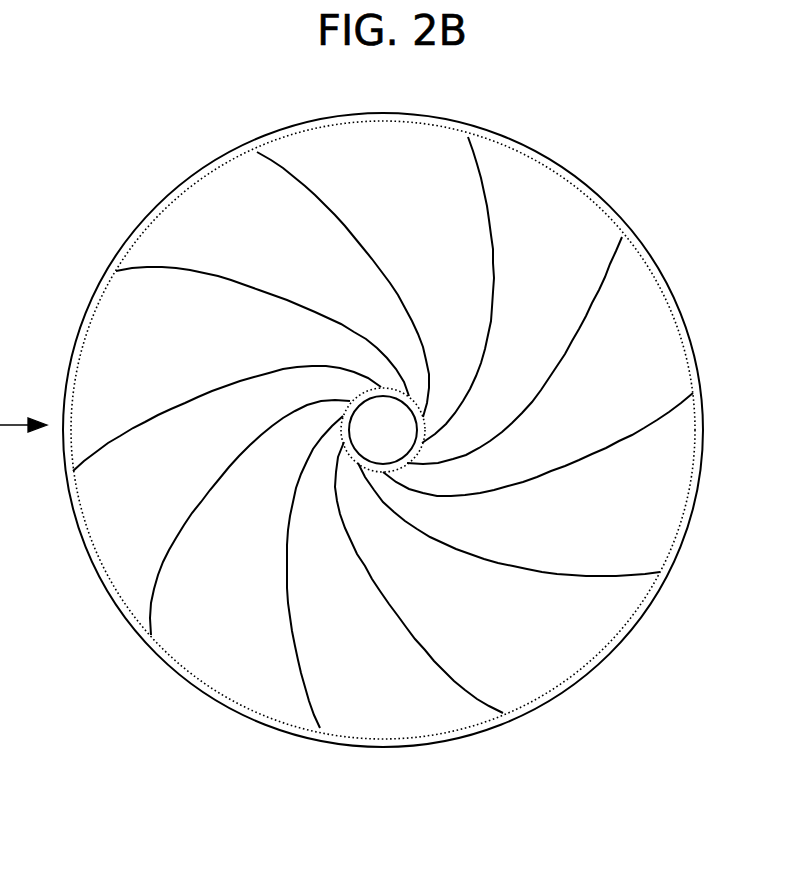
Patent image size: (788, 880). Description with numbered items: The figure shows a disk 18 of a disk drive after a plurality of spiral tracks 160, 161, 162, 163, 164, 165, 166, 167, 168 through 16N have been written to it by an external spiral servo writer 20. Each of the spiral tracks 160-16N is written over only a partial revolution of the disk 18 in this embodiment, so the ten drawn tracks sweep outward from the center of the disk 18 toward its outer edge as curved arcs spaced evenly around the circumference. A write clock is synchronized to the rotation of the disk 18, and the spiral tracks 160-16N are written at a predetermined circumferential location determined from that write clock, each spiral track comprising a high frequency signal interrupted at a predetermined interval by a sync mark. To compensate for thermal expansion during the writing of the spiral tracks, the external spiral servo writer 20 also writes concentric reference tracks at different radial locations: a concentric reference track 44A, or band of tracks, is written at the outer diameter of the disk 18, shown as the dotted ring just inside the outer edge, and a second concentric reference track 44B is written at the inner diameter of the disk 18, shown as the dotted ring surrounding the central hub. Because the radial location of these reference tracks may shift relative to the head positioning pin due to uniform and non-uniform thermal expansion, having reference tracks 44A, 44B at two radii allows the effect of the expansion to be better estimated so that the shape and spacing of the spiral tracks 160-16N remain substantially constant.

The spiral track 160 is at (483, 177).
The spiral track 161 is at (615, 263).
The spiral track 162 is at (672, 413).
The spiral track 163 is at (613, 580).
The spiral track 164 is at (477, 700).
The spiral track 165 is at (305, 695).
The spiral track 166 is at (155, 602).
The spiral track 167 is at (97, 453).
The spiral track 168 is at (143, 265).
The spiral track 16N is at (283, 160).
The disk 18 is at (587, 179).
The external spiral servo writer 20 is at (0, 126).
The concentric reference track 44A is at (685, 523).
The concentric reference track 44B is at (425, 423).